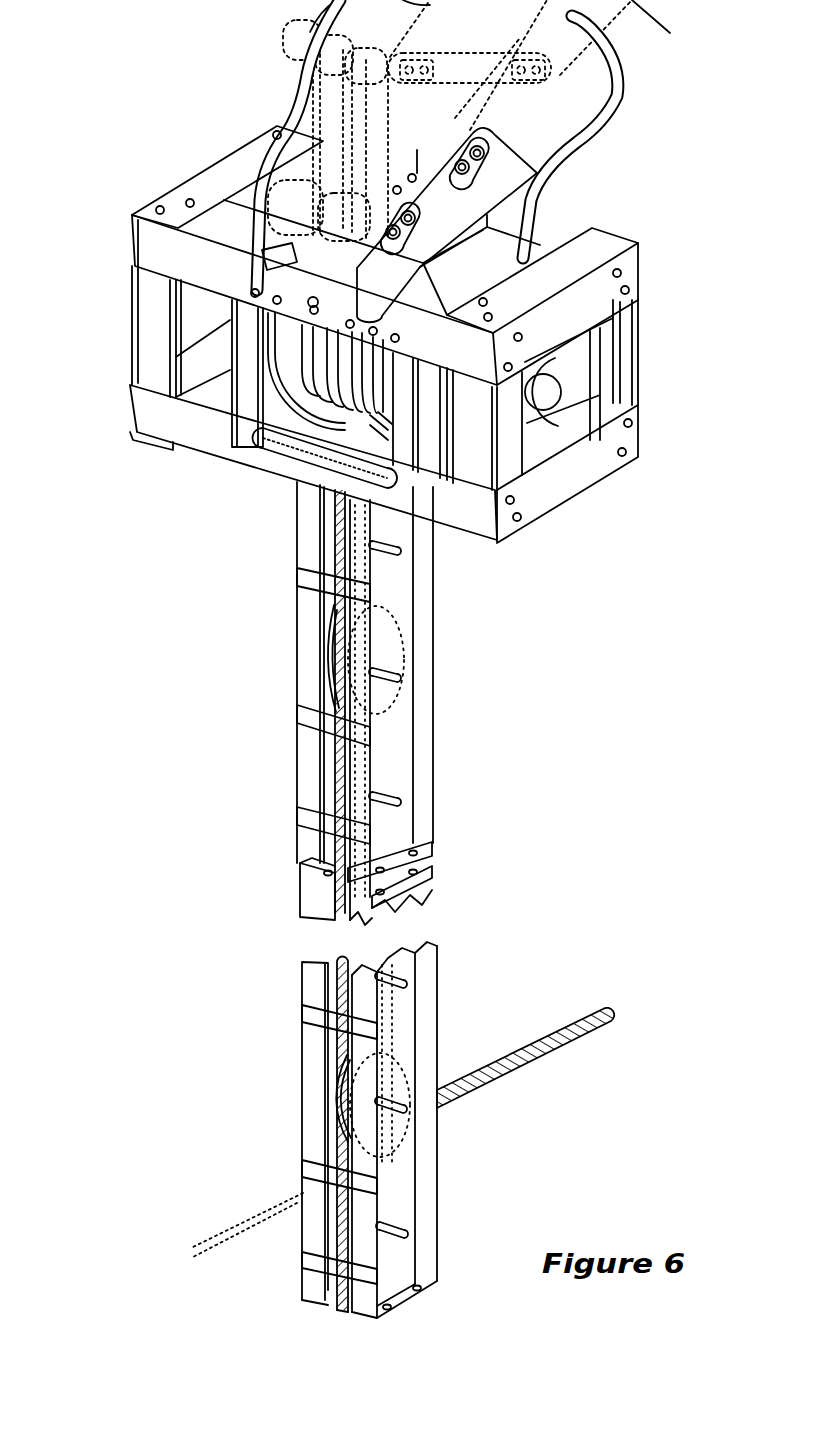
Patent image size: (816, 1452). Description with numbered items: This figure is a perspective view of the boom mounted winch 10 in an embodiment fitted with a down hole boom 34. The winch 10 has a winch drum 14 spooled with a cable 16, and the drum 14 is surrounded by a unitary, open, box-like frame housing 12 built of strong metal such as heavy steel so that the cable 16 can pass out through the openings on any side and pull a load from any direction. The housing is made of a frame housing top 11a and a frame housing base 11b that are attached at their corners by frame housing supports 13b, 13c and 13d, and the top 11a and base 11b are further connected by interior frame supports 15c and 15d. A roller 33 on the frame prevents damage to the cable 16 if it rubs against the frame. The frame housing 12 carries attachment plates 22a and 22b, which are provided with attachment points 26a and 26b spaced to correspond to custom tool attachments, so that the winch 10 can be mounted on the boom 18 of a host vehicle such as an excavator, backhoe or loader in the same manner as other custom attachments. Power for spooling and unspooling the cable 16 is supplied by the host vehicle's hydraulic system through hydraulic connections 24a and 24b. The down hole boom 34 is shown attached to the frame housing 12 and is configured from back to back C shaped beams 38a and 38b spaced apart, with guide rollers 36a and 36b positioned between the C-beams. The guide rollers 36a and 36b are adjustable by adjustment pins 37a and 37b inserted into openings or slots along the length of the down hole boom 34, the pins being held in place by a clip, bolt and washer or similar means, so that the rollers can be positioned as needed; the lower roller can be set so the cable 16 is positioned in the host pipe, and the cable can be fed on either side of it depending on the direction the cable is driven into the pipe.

The winch 10 is at (710, 118).
The frame housing top 11a is at (132, 242).
The frame housing base 11b is at (132, 410).
The frame housing 12 is at (642, 277).
The frame housing support 13b is at (137, 317).
The frame housing support 13c is at (635, 343).
The frame housing support 13d is at (508, 463).
The winch drum 14 is at (548, 400).
The interior frame support 15c is at (400, 450).
The interior frame support 15d is at (248, 403).
The cable 16 is at (563, 1053).
The boom 18 is at (666, 26).
The attachment plate 22a is at (510, 133).
The attachment plate 22b is at (260, 168).
The hydraulic connection 24a is at (630, 90).
The hydraulic connection 24b is at (297, 110).
The attachment point 26a is at (490, 160).
The attachment point 26b is at (413, 213).
The roller 33 is at (302, 443).
The down hole boom 34 is at (433, 690).
The guide roller 36a is at (395, 622).
The guide roller 36b is at (403, 1063).
The adjustment pin 37a is at (373, 672).
The adjustment pin 37b is at (379, 1100).
The C shaped beam 38a is at (435, 773).
The C shaped beam 38b is at (437, 980).